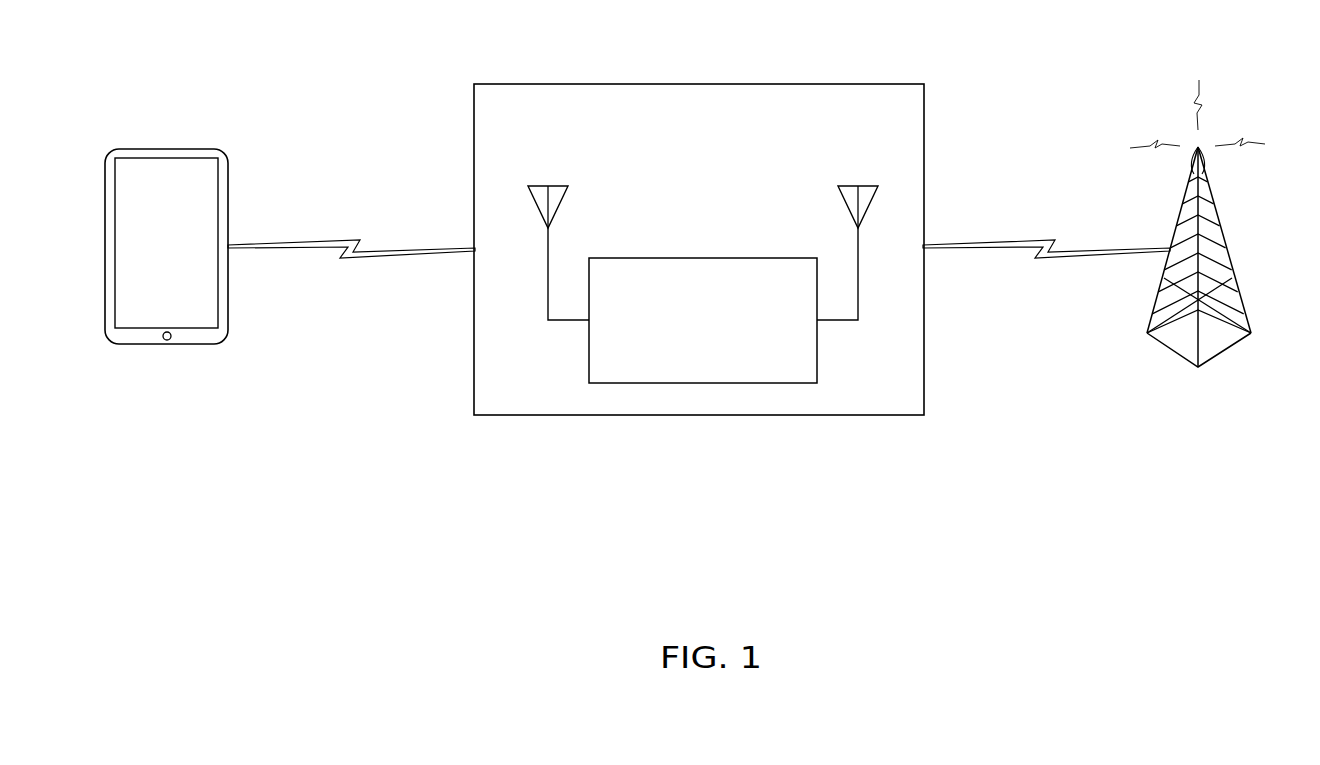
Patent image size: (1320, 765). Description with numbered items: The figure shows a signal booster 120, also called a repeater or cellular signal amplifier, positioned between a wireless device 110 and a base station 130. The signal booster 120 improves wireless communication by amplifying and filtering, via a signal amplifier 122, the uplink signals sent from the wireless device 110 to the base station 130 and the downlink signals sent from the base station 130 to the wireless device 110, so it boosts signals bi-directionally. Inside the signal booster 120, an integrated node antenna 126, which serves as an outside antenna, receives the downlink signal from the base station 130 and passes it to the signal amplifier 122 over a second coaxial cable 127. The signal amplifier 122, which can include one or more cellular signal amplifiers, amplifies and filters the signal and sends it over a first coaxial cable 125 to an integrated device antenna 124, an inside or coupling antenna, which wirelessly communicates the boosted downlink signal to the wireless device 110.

The wireless device 110 is at (160, 149).
The signal booster 120 is at (815, 124).
The signal amplifier 122 is at (724, 346).
The integrated device antenna 124 is at (548, 194).
The first coaxial cable 125 is at (539, 274).
The integrated node antenna 126 is at (858, 193).
The second coaxial cable 127 is at (862, 274).
The base station 130 is at (1220, 210).